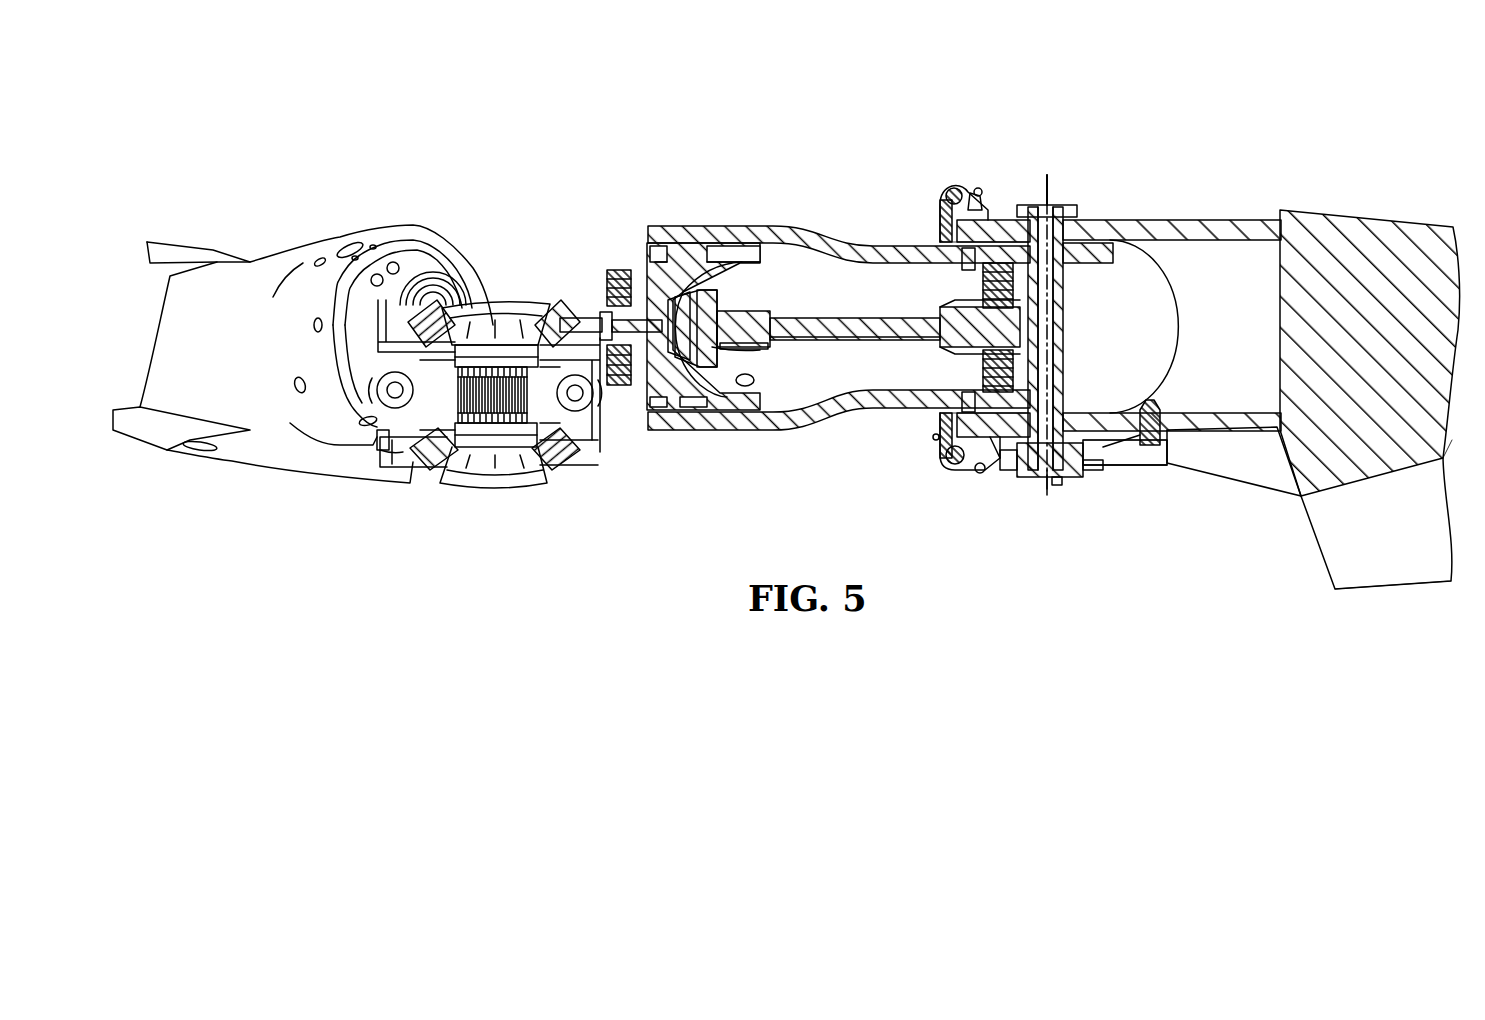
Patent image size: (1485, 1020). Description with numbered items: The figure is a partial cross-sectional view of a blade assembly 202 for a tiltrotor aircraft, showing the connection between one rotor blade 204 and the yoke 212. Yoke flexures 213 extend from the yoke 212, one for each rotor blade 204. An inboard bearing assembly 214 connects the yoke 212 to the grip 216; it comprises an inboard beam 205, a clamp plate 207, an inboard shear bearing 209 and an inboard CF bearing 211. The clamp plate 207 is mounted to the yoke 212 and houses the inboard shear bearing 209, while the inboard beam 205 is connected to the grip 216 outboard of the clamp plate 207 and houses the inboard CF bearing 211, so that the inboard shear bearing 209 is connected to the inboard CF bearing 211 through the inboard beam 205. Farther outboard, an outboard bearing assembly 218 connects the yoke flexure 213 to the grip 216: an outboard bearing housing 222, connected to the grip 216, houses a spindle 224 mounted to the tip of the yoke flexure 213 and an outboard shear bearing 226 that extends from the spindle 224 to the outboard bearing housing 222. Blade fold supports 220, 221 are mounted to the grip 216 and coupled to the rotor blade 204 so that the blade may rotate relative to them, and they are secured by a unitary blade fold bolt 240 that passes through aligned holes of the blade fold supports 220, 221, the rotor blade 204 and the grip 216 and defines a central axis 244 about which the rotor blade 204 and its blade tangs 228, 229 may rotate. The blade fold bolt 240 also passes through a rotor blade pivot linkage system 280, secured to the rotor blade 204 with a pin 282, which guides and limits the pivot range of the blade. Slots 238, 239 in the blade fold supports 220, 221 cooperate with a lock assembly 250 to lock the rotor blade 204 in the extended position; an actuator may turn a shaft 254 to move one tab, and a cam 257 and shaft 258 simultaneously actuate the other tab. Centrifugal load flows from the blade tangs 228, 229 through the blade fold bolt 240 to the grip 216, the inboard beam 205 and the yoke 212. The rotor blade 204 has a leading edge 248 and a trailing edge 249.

The blade assembly 202 is at (394, 140).
The rotor blade 204 is at (250, 252).
The inboard beam 205 is at (728, 252).
The clamp plate 207 is at (622, 273).
The inboard shear bearing 209 is at (600, 290).
The inboard CF bearing 211 is at (682, 298).
The yoke 212 is at (600, 318).
The yoke flexure 213 is at (810, 316).
The inboard bearing assembly 214 is at (623, 416).
The grip 216 is at (730, 432).
The outboard bearing assembly 218 is at (1028, 296).
The blade fold support 220 is at (942, 200).
The blade fold support 221 is at (936, 446).
The outboard bearing housing 222 is at (1013, 388).
The spindle 224 is at (950, 350).
The outboard shear bearing 226 is at (983, 290).
The blade tang 228 is at (1007, 213).
The blade tang 229 is at (975, 463).
The slot 238 is at (960, 228).
The slot 239 is at (960, 423).
The blade fold bolt 240 is at (1067, 207).
The central axis 244 is at (1053, 183).
The leading edge 248 is at (1410, 195).
The trailing edge 249 is at (1385, 606).
The lock assembly 250 is at (1007, 516).
The shaft 254 is at (947, 452).
The cam 257 is at (967, 184).
The shaft 258 is at (969, 181).
The rotor blade pivot linkage system 280 is at (1119, 516).
The pin 282 is at (1163, 408).